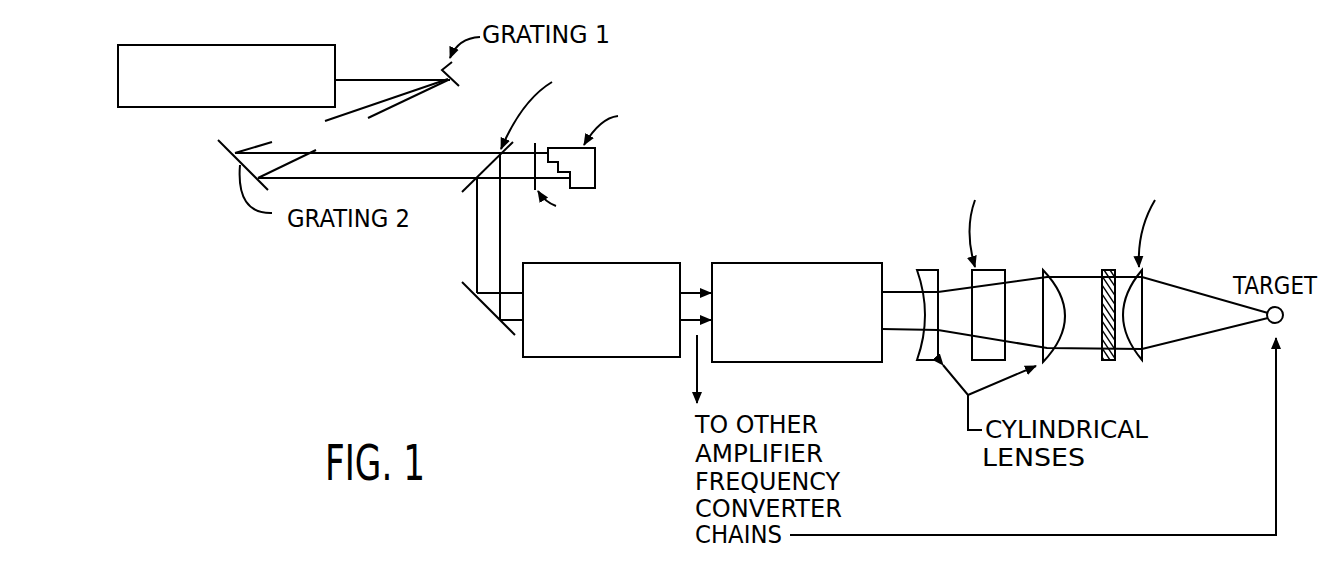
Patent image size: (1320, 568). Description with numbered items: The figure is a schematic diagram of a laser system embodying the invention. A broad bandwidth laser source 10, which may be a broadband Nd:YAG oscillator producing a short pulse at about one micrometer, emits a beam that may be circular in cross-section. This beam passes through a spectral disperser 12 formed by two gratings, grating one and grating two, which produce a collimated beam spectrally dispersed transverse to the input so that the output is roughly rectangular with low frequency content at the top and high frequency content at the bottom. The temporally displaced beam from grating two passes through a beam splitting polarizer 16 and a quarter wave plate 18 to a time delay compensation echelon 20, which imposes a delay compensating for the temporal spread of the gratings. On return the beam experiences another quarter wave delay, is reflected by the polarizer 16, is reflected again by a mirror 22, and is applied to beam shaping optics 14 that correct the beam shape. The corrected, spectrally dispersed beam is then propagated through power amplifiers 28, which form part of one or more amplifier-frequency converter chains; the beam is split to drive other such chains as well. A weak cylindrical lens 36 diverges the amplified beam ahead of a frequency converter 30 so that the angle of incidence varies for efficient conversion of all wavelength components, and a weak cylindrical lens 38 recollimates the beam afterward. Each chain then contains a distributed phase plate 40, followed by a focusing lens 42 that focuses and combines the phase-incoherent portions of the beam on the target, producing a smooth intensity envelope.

The broad bandwidth laser source 10 is at (250, 45).
The spectral disperser 12 is at (428, 139).
The beam shaping optics 14 is at (632, 263).
The beam splitting polarizer 16 is at (499, 150).
The quarter wave plate 18 is at (538, 148).
The time delay compensation echelon 20 is at (579, 146).
The mirror 22 is at (490, 316).
The power amplifiers 28 is at (832, 263).
The frequency converter 30 is at (988, 270).
The weak cylindrical lens 36 is at (929, 362).
The weak cylindrical lens 38 is at (1052, 363).
The distributed phase plate 40 is at (1106, 270).
The focusing lens 42 is at (1145, 270).